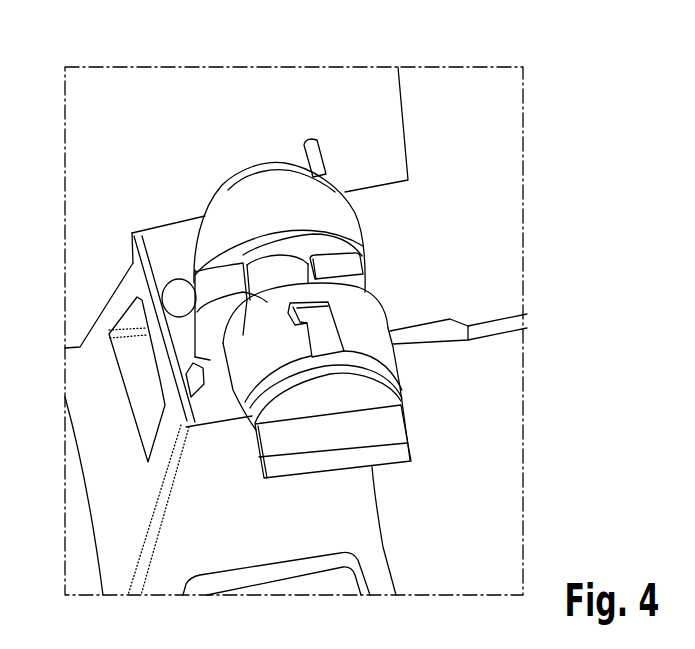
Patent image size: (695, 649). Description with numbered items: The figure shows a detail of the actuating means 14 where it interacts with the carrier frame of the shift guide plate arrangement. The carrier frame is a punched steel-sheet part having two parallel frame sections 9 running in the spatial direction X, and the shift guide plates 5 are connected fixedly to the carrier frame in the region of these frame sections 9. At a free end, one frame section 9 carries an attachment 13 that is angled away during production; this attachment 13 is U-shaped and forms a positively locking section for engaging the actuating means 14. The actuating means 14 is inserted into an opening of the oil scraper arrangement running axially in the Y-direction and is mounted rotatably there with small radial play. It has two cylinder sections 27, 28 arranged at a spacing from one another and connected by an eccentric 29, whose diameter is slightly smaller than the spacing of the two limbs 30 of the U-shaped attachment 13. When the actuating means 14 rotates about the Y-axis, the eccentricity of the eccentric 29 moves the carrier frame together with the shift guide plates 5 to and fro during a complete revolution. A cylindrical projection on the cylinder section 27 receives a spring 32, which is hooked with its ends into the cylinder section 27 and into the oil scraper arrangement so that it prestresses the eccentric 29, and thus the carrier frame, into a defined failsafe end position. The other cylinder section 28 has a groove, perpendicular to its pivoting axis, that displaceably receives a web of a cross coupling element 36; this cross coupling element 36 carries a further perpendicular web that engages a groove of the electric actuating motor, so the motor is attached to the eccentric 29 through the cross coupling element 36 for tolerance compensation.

The shift guide plate 5 is at (107, 508).
The frame section 9 is at (500, 151).
The attachment 13 is at (219, 334).
The actuating means 14 is at (184, 188).
The cylinder section 27 is at (335, 215).
The cylinder section 28 is at (242, 352).
The eccentric 29 is at (270, 275).
The limb 30 is at (196, 313).
The spring 32 is at (258, 167).
The cross coupling element 36 is at (432, 448).